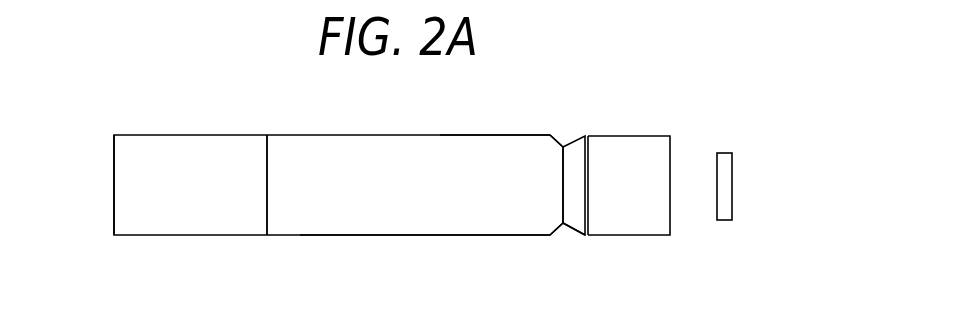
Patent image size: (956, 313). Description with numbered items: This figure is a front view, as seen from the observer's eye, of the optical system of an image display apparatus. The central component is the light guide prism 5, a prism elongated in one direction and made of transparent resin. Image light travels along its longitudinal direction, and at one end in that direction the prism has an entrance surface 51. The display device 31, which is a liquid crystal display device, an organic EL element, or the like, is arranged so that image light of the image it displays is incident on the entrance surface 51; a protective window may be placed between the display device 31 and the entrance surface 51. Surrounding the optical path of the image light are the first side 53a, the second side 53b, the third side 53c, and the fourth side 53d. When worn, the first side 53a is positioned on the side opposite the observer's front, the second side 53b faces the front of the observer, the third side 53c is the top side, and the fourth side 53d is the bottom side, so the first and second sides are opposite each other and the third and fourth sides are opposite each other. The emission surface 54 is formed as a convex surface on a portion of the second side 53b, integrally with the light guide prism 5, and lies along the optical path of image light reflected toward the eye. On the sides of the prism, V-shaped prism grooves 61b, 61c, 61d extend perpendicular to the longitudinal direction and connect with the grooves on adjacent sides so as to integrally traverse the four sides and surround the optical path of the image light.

The light guide prism 5 is at (417, 128).
The emission surface 54 is at (148, 189).
The second side 53b is at (312, 157).
The first side 53a is at (375, 155).
The third side 53c is at (482, 135).
The fourth side 53d is at (415, 237).
The prism groove 61c is at (565, 140).
The prism groove 61b is at (577, 165).
The prism groove 61d is at (573, 237).
The entrance surface 51 is at (672, 158).
The display device 31 is at (733, 163).